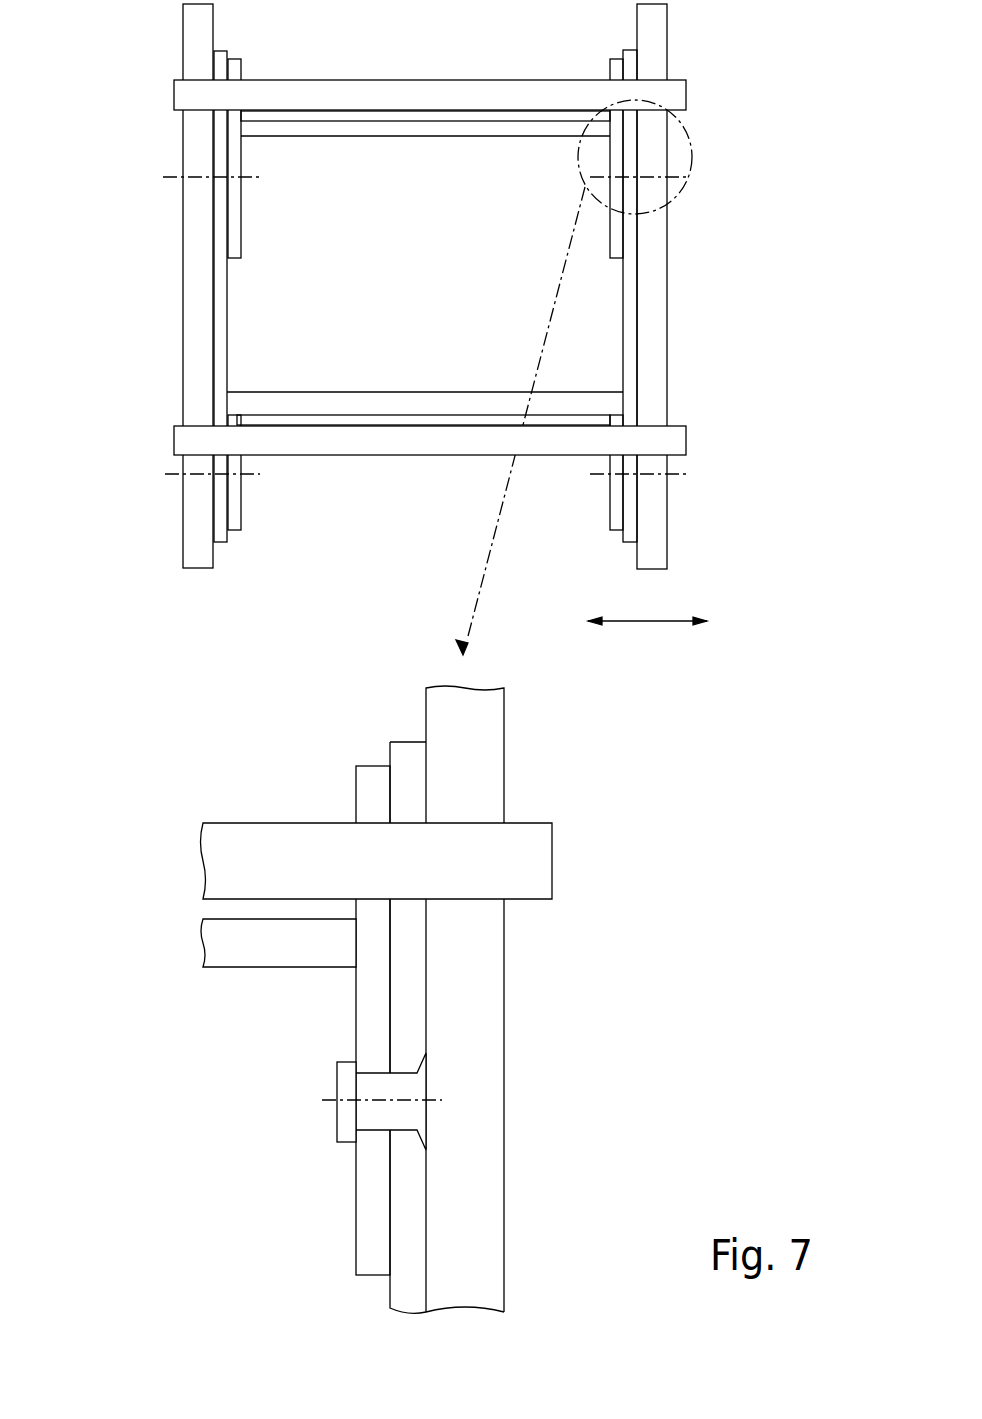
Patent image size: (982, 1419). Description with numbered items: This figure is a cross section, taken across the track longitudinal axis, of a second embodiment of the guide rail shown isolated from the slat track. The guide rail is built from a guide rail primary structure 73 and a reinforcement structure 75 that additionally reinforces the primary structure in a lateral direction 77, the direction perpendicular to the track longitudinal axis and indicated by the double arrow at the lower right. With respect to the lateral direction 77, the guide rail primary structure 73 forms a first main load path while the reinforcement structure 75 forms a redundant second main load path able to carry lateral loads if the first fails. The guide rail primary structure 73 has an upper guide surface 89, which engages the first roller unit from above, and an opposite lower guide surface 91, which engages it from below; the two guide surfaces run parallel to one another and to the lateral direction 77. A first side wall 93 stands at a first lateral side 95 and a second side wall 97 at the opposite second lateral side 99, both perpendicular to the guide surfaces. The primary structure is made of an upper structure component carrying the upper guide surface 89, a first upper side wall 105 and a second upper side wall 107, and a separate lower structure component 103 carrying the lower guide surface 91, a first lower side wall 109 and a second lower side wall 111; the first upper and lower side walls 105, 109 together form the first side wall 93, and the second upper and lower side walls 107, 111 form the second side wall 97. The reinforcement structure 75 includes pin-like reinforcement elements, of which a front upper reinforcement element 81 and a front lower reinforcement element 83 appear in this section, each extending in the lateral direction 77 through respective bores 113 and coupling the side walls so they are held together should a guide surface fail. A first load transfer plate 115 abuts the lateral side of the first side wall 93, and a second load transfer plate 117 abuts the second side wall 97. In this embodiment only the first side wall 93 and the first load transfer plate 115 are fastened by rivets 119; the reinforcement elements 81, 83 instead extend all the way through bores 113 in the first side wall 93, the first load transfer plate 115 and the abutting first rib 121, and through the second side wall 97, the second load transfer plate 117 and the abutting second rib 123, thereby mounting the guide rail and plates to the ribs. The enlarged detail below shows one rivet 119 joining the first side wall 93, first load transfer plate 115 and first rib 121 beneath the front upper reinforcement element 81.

The guide rail primary structure 73 is at (417, 138).
The reinforcement structure 75 is at (437, 456).
The lateral direction 77 is at (675, 618).
The front upper reinforcement element 81 is at (367, 90).
The front lower reinforcement element 83 is at (373, 440).
The upper guide surface 89 is at (342, 150).
The lower guide surface 91 is at (342, 378).
The first side wall 93 is at (483, 667).
The first lateral side 95 is at (737, 492).
The second side wall 97 is at (149, 298).
The second lateral side 99 is at (118, 491).
The lower structure component 103 is at (571, 397).
The first upper side wall 105 is at (612, 230).
The second upper side wall 107 is at (233, 237).
The first lower side wall 109 is at (613, 518).
The second lower side wall 111 is at (233, 515).
The bore 113 is at (238, 78).
The first load transfer plate 115 is at (627, 287).
The second load transfer plate 117 is at (222, 308).
The rivet 119 is at (198, 177).
The first rib 121 is at (657, 28).
The second rib 123 is at (195, 37).